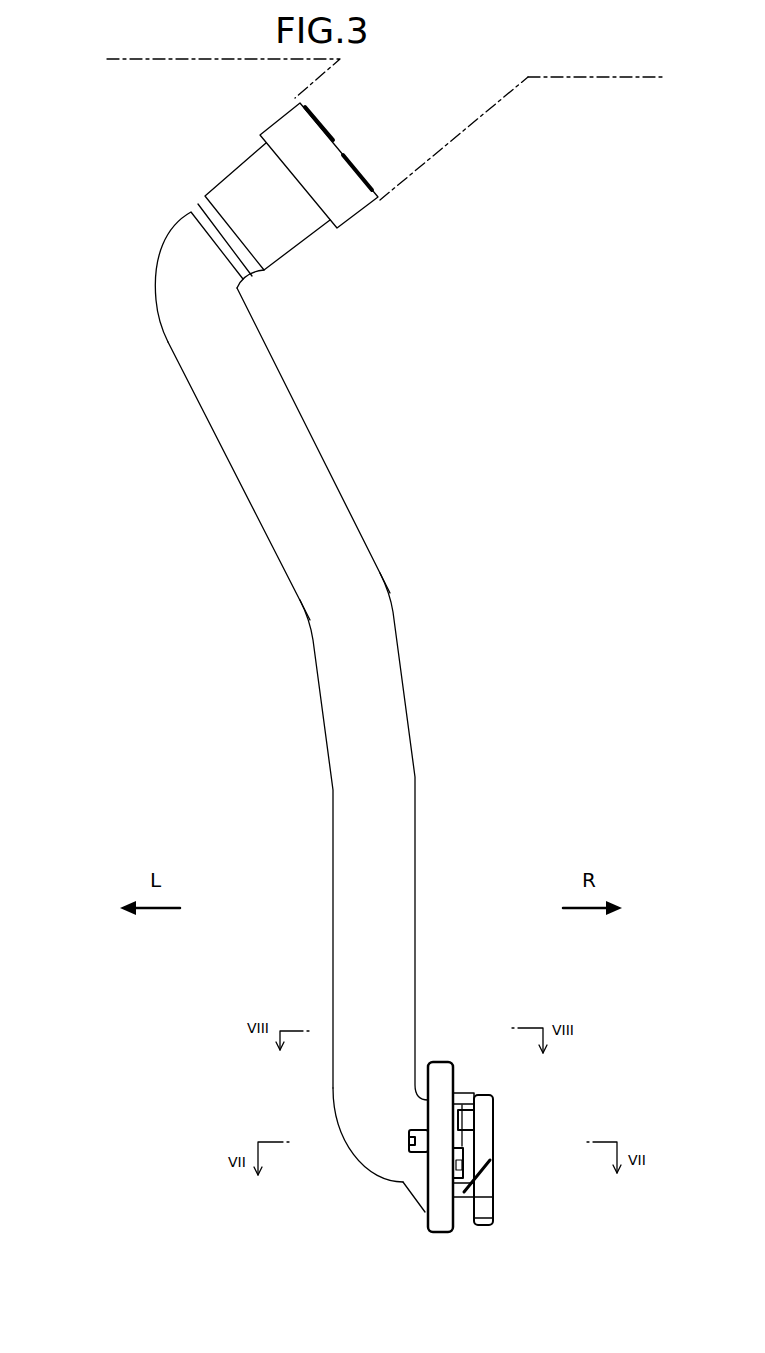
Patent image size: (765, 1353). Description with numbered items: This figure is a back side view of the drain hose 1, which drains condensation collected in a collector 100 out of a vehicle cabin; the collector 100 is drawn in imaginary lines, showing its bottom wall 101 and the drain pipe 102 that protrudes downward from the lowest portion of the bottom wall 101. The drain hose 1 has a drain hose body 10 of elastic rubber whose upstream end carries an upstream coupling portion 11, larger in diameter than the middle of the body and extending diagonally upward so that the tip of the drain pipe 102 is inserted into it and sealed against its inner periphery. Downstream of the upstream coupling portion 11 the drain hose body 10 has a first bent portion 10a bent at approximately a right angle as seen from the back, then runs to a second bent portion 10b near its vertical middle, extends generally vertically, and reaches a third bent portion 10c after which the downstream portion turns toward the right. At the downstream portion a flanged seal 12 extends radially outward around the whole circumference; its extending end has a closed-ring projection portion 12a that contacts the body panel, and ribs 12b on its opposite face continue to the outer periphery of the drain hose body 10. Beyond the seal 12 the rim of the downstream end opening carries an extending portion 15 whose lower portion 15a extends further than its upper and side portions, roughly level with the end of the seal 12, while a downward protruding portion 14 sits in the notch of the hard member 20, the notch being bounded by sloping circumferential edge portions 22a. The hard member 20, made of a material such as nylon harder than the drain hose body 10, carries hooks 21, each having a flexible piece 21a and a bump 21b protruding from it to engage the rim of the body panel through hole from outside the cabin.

The drain hose 1 is at (408, 394).
The drain hose body 10 is at (277, 697).
The first bent portion 10a is at (157, 264).
The second bent portion 10b is at (393, 598).
The third bent portion 10c is at (350, 1152).
The upstream coupling portion 11 is at (250, 185).
The seal 12 is at (400, 1138).
The projection portion 12a is at (456, 1232).
The ribs 12b is at (408, 1143).
The protruding portion 14 is at (476, 1226).
The extending portion 15 is at (536, 1158).
The lower portion 15a is at (477, 1222).
The hard member 20 is at (456, 1131).
The hooks 21 is at (471, 1091).
The flexible piece 21a is at (471, 1160).
The bump 21b is at (455, 1092).
The circumferential edge portions 22a is at (470, 1196).
The collector 100 is at (129, 64).
The bottom wall 101 is at (622, 78).
The drain pipe 102 is at (467, 128).